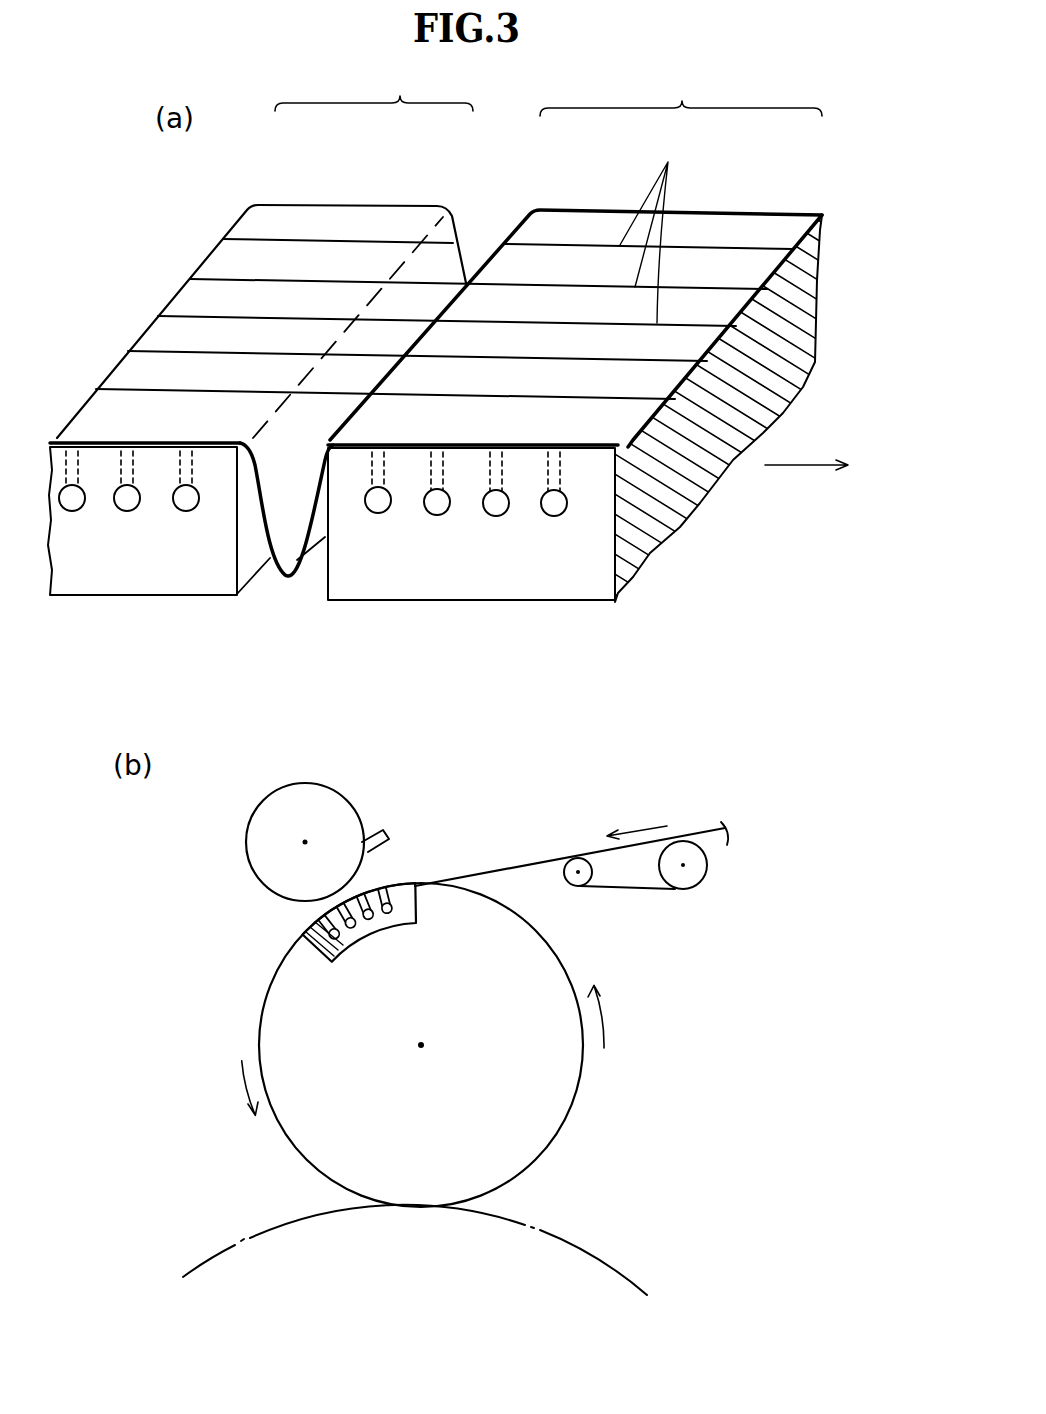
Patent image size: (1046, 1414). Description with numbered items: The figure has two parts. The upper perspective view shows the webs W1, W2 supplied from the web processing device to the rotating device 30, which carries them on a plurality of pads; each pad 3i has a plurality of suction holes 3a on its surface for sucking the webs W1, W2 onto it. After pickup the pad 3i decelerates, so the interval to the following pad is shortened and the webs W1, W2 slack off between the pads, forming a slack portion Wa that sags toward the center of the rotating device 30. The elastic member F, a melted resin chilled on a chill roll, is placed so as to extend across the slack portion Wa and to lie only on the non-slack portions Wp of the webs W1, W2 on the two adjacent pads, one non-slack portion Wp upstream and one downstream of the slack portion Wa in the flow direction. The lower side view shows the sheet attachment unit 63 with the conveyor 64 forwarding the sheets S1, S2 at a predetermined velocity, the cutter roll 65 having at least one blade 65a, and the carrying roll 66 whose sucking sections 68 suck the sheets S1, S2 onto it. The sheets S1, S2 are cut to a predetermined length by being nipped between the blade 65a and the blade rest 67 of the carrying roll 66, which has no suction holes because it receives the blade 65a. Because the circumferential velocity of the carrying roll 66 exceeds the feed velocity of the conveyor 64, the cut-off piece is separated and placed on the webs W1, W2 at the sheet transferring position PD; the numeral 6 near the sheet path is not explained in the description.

The web W1 is at (425, 283).
The web W2 is at (340, 218).
The non-slack portion Wp is at (548, 89).
The elastic member F is at (651, 226).
The pad 3i is at (408, 582).
The slack portion Wa is at (283, 580).
The suction holes 3a is at (178, 480).
The carrying roll 66 is at (258, 1026).
The blade rest 67 is at (412, 910).
The sucking section 68 is at (318, 950).
The cutter roll 65 is at (282, 785).
The blade 65a is at (372, 832).
The sheet attachment unit 63 is at (238, 928).
The sheet S1 is at (571, 854).
The sheet S2 is at (483, 880).
The conveyor 64 is at (630, 889).
The web supply 6 is at (520, 808).
The sheet transferring position PD is at (316, 1186).
The rotating device 30 is at (580, 1247).